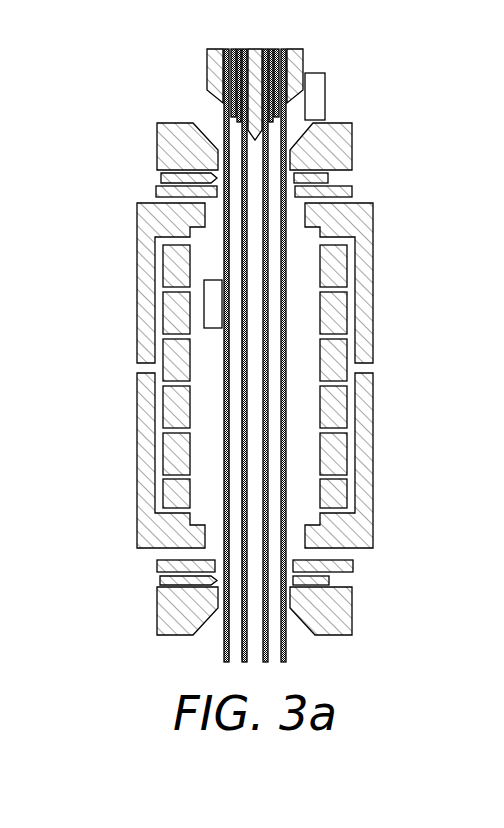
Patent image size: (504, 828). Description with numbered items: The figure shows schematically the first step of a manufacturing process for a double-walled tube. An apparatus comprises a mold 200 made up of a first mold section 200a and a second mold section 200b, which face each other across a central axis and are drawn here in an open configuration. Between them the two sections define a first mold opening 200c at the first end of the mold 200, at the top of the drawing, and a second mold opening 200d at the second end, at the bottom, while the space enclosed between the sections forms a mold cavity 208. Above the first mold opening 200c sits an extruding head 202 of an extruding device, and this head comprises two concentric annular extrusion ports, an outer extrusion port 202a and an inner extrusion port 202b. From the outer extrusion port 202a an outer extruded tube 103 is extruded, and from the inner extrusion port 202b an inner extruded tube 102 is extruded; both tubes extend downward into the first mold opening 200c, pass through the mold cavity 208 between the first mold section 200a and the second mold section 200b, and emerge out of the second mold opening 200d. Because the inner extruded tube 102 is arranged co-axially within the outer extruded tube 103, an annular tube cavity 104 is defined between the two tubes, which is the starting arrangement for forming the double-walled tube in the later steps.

The mold 200 is at (119, 121).
The first mold section 200a is at (139, 317).
The second mold section 200b is at (372, 317).
The first mold opening 200c is at (213, 212).
The second mold opening 200d is at (213, 533).
The extruding head 202 is at (303, 57).
The outer annular extrusion port 202a is at (229, 69).
The inner annular extrusion port 202b is at (268, 58).
The inner extruded tube 102 is at (242, 448).
The outer extruded tube 103 is at (225, 487).
The annular tube cavity 104 is at (235, 405).
The mold cavity 208 is at (307, 403).